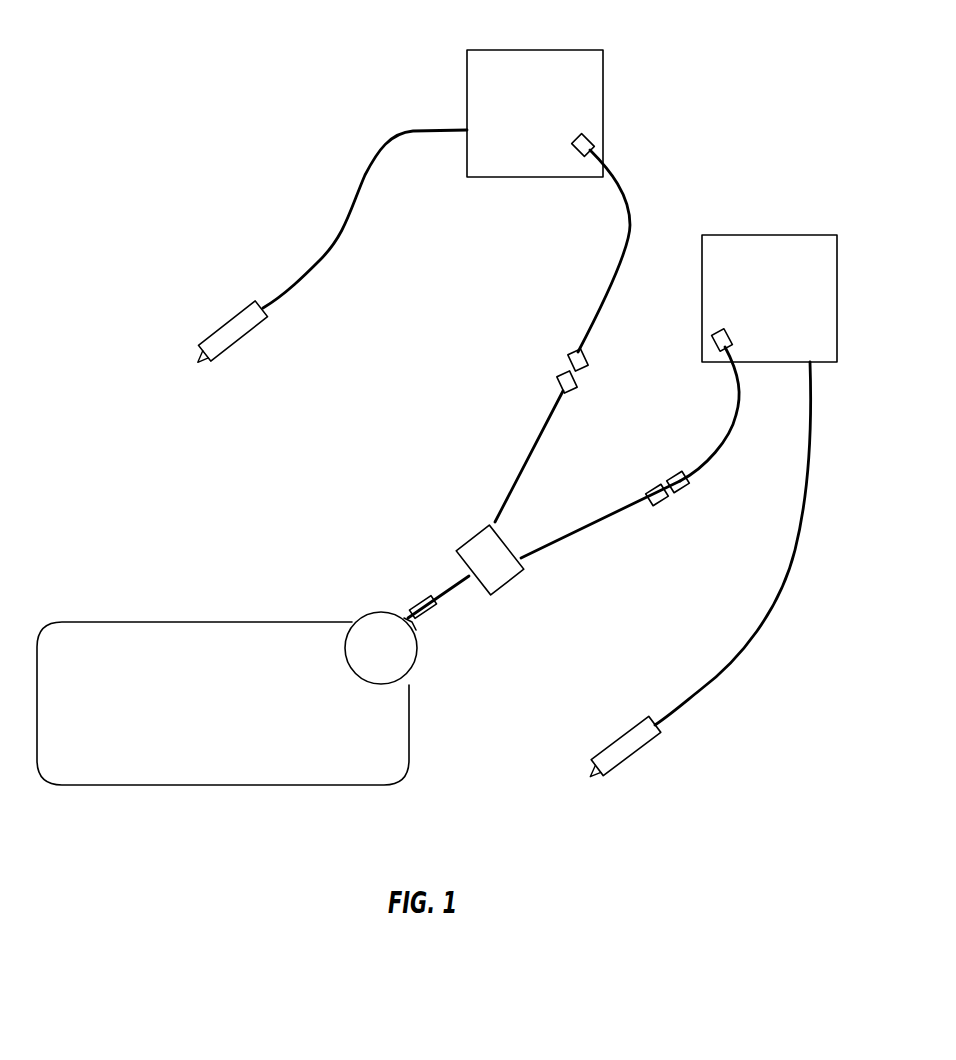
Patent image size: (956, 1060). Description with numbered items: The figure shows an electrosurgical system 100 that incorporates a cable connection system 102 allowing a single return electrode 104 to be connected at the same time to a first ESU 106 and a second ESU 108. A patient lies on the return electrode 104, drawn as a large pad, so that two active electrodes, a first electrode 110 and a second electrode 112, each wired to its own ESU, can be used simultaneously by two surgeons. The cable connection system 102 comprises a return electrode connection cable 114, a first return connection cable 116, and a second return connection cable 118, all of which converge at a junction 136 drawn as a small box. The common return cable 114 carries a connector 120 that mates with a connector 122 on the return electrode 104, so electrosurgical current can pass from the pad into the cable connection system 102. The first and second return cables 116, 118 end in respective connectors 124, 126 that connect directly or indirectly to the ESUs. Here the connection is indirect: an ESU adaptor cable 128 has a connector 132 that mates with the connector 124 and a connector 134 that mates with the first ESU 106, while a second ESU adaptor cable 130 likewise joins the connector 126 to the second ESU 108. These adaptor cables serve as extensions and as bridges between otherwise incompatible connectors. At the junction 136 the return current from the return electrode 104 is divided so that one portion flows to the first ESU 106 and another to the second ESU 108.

The electrosurgical system 100 is at (290, 58).
The cable connection system 102 is at (433, 637).
The return electrode 104 is at (267, 785).
The first ESU 106 is at (603, 72).
The second ESU 108 is at (790, 235).
The first electrode 110 is at (223, 323).
The second electrode 112 is at (633, 757).
The return electrode connection cable 114 is at (438, 572).
The first return connection cable 116 is at (517, 460).
The second return connection cable 118 is at (568, 562).
The connector 120 is at (414, 612).
The connector 122 is at (403, 617).
The connector 124 is at (557, 378).
The connector 126 is at (655, 487).
The ESU adaptor cable 128 is at (597, 252).
The ESU adaptor cable 130 is at (722, 415).
The connector 132 is at (572, 352).
The connector 134 is at (588, 137).
The junction 136 is at (465, 545).